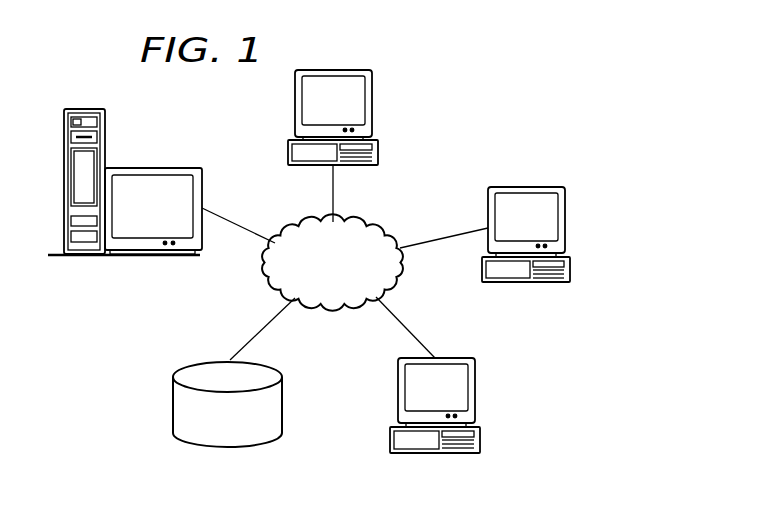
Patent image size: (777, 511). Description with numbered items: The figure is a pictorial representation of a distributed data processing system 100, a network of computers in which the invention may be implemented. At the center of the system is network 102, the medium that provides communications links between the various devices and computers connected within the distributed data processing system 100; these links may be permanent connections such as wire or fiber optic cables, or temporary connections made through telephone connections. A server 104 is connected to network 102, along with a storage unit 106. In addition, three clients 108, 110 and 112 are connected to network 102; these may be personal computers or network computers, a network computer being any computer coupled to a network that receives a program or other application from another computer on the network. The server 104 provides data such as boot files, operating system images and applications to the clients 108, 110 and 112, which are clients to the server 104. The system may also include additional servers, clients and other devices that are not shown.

The distributed data processing system 100 is at (492, 99).
The network 102 is at (362, 223).
The server 104 is at (155, 167).
The storage unit 106 is at (172, 404).
The client 108 is at (373, 105).
The client 110 is at (566, 225).
The client 112 is at (476, 392).